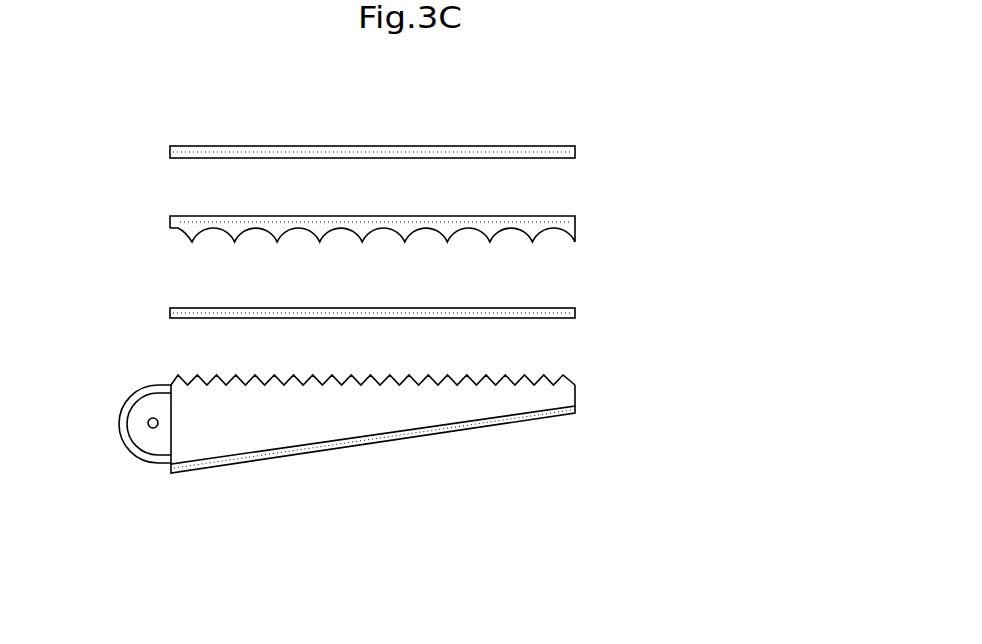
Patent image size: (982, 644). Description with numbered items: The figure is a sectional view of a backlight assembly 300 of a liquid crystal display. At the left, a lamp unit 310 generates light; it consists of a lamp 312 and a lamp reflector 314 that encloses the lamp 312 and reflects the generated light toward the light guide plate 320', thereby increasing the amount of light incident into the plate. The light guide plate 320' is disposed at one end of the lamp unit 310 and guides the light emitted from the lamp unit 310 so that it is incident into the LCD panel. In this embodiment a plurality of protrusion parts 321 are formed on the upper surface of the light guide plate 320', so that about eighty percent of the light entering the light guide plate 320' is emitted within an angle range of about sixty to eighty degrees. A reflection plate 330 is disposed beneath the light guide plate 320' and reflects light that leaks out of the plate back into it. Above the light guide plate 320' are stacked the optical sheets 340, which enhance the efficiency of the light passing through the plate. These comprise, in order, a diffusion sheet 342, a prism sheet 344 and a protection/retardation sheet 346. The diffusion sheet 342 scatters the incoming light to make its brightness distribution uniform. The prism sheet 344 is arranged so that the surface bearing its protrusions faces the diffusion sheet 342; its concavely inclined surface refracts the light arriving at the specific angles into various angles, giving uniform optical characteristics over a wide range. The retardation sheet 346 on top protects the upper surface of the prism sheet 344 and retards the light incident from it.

The backlight assembly 300 is at (755, 212).
The lamp unit 310 is at (105, 469).
The lamp 312 is at (99, 456).
The lamp reflector 314 is at (140, 457).
The light guide plate 320' is at (392, 389).
The protrusion parts 321 is at (171, 384).
The reflection plate 330 is at (575, 410).
The optical sheets 340 is at (687, 158).
The diffusion sheet 342 is at (575, 313).
The prism sheet 344 is at (575, 225).
The protection/retardation sheet 346 is at (575, 153).